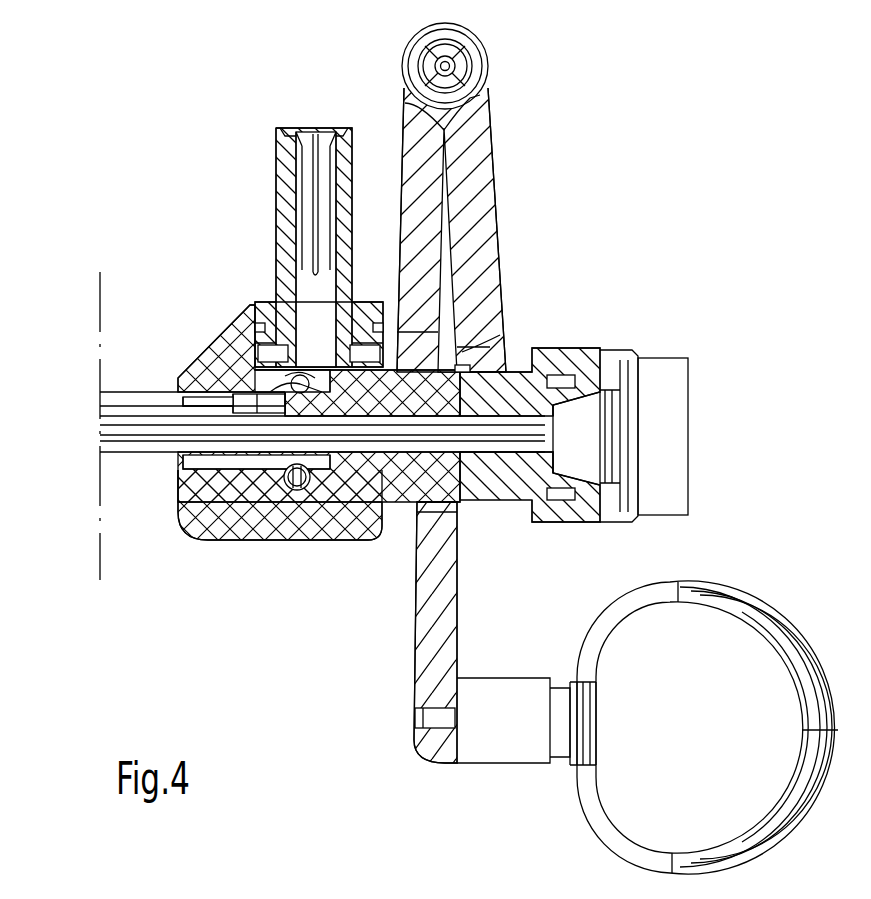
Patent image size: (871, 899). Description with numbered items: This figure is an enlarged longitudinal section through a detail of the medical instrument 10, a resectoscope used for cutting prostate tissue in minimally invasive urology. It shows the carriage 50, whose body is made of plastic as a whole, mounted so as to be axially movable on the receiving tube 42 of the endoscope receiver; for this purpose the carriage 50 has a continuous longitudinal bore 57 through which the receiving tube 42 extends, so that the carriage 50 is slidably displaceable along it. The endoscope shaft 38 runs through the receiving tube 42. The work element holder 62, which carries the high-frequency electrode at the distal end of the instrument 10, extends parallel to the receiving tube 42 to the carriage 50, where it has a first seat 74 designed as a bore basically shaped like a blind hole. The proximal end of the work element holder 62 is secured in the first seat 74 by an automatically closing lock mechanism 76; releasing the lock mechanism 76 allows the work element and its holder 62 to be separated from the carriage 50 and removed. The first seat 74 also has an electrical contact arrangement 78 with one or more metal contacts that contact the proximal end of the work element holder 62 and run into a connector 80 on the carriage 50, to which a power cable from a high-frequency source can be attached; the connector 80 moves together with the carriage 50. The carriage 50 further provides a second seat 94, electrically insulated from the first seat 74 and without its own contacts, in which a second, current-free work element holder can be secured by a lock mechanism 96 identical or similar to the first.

The medical instrument 10 is at (698, 166).
The endoscope shaft 38 is at (112, 434).
The receiving tube 42 is at (128, 455).
The carriage 50 is at (238, 512).
The continuous longitudinal bore 57 is at (490, 352).
The work element holder 62 is at (126, 395).
The first seat 74 is at (253, 388).
The lock mechanism 76 is at (228, 315).
The electrical contact arrangement 78 is at (356, 300).
The connector 80 is at (278, 170).
The second seat 94 is at (190, 462).
The lock mechanism 96 is at (303, 492).